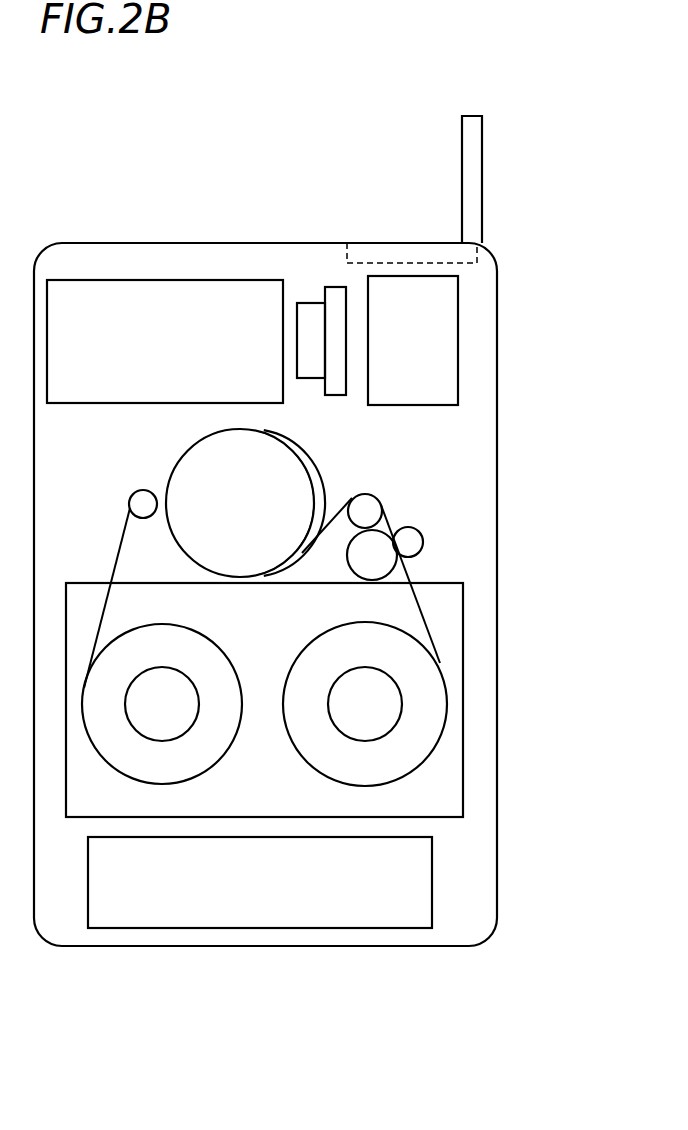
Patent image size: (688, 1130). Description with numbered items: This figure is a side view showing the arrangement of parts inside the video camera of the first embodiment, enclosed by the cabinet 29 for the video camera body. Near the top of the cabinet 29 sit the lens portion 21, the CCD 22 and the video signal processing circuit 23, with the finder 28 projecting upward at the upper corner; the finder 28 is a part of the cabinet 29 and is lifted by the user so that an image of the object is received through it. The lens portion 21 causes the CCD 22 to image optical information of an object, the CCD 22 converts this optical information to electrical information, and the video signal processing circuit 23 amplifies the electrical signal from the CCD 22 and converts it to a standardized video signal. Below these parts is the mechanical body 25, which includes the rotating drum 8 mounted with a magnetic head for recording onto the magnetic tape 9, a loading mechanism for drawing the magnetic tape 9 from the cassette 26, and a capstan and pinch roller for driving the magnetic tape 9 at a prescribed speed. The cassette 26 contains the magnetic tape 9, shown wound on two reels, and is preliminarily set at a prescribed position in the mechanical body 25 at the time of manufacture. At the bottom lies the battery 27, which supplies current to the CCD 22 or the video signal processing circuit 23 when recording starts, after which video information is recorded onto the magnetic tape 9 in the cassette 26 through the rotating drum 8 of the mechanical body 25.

The rotating drum 8 is at (322, 468).
The magnetic tape 9 is at (417, 625).
The lens portion 21 is at (164, 280).
The CCD 22 is at (312, 303).
The video signal processing circuit 23 is at (458, 300).
The mechanical body 25 is at (408, 512).
The cassette 26 is at (437, 793).
The battery 27 is at (432, 886).
The finder 28 is at (482, 181).
The cabinet 29 is at (497, 385).